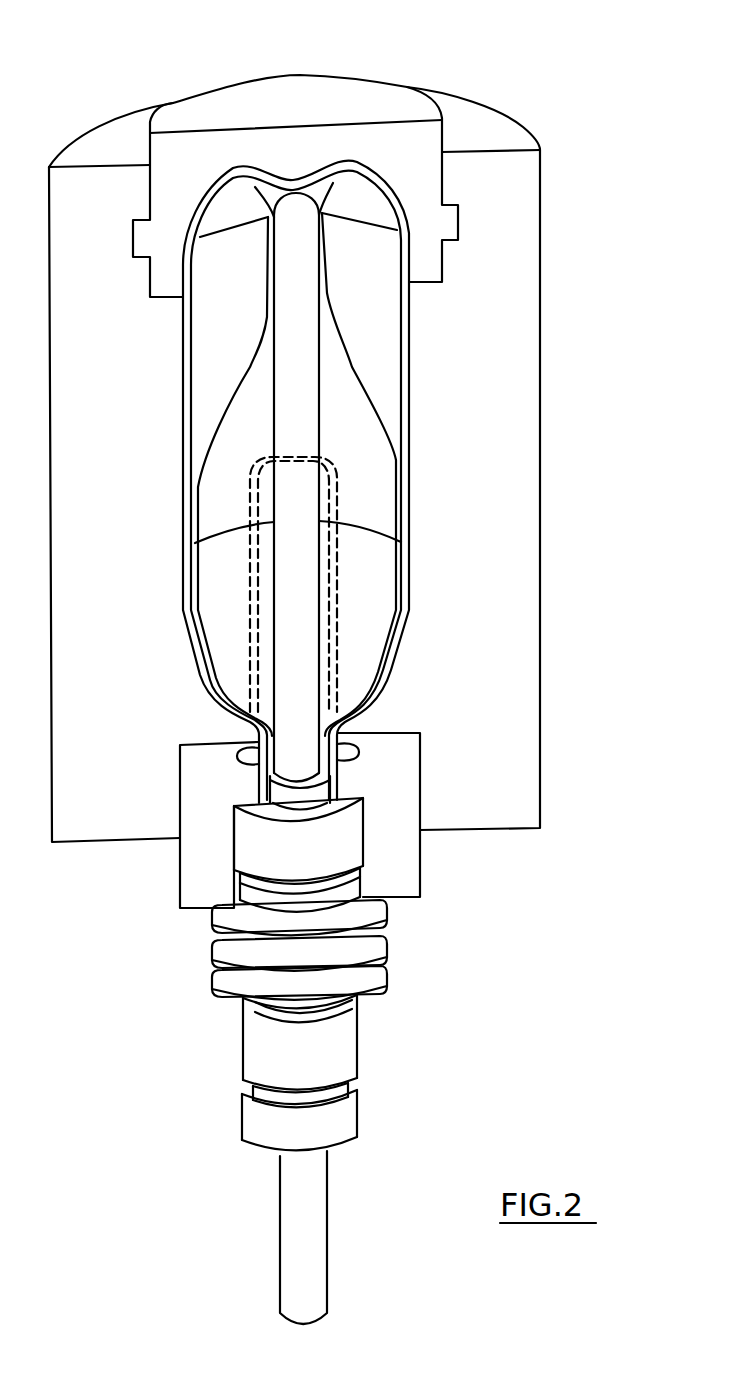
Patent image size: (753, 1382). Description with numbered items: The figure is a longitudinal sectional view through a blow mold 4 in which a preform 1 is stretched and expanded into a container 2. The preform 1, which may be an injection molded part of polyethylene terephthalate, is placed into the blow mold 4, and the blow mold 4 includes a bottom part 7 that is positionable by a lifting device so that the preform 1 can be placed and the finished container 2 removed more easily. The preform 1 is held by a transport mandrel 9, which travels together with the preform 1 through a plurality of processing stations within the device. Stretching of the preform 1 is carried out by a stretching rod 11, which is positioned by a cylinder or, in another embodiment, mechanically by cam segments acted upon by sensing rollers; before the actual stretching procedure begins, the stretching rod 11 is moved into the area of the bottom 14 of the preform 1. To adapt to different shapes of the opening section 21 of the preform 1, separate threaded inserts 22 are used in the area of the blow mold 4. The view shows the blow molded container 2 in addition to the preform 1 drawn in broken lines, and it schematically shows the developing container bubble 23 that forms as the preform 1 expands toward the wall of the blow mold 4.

The preform 1 is at (337, 620).
The container 2 is at (409, 392).
The blow mold 4 is at (498, 458).
The bottom part 7 is at (378, 88).
The transport mandrel 9 is at (377, 968).
The stretching rod 11 is at (277, 1255).
The bottom 14 is at (328, 457).
The opening section 21 is at (335, 767).
The threaded inserts 22 is at (403, 857).
The container bubble 23 is at (347, 350).